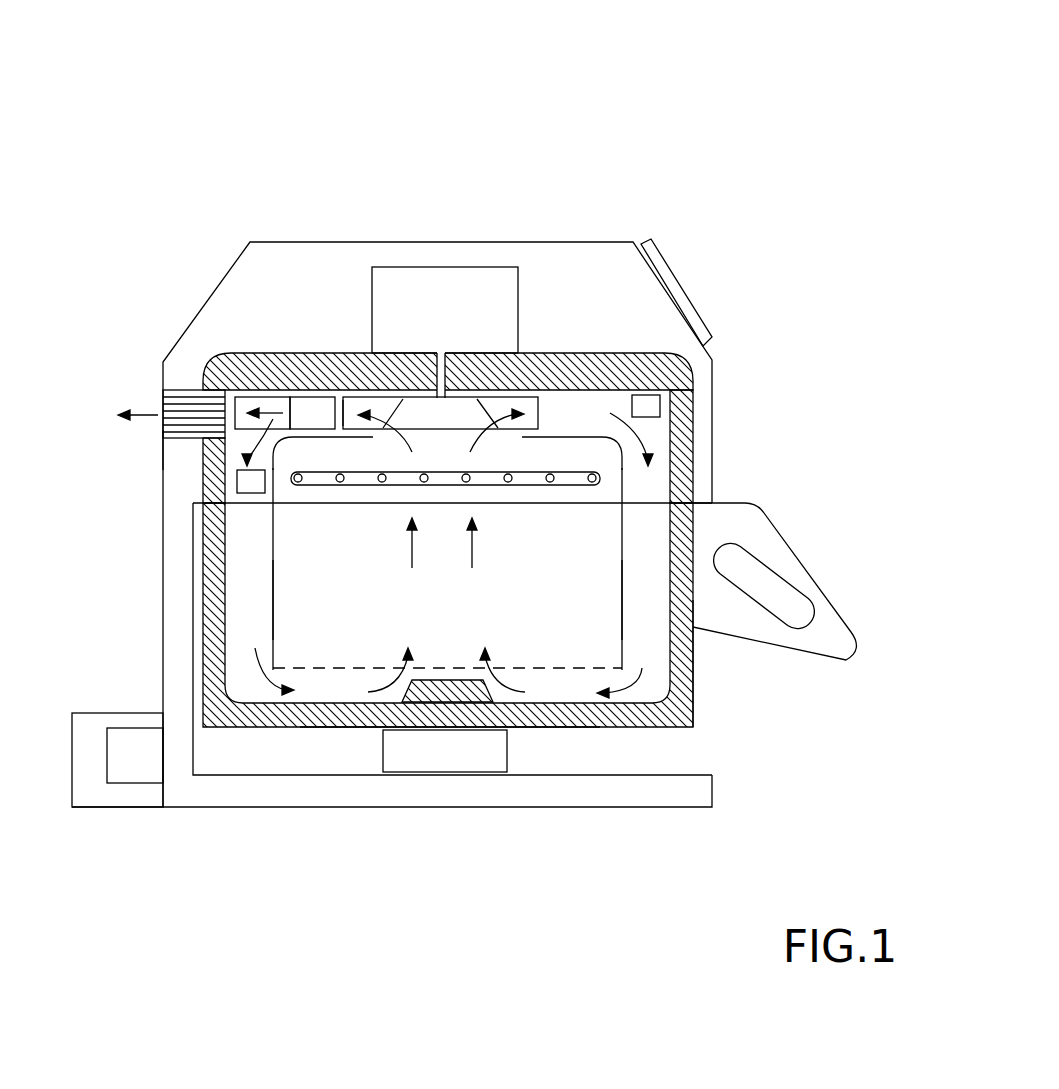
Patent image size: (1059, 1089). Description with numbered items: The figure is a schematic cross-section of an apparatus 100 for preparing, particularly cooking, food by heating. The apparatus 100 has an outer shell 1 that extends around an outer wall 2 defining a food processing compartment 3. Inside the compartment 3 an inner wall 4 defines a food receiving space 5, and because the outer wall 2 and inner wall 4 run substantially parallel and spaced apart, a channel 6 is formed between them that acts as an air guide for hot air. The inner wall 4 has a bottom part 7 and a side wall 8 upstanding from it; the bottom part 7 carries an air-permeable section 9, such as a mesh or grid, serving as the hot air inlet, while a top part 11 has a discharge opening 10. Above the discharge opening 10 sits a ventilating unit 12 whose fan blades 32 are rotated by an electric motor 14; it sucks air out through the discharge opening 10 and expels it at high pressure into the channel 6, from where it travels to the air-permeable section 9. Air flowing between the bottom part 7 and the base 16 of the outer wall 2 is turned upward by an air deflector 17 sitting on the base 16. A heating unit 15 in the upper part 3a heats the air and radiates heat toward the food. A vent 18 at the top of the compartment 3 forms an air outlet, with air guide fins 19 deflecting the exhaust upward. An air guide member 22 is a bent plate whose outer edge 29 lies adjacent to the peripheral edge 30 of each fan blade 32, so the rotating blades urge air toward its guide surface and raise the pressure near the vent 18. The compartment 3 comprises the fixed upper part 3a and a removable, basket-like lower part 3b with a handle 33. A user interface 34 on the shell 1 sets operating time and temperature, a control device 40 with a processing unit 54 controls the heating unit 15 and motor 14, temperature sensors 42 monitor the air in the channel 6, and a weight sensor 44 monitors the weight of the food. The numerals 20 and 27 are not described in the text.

The apparatus 100 is at (652, 147).
The outer shell 1 is at (192, 788).
The outer wall 2 is at (207, 682).
The food processing compartment 3 is at (585, 550).
The upper part 3a is at (610, 450).
The lower part 3b is at (342, 680).
The inner wall 4 is at (272, 623).
The food receiving space 5 is at (285, 592).
The channel 6 is at (233, 545).
The bottom part 7 is at (280, 672).
The side wall 8 is at (622, 618).
The air-permeable section 9 is at (550, 727).
The discharge opening 10 is at (447, 447).
The top part 11 is at (565, 435).
The ventilating unit 12 is at (437, 417).
The electric motor 14 is at (420, 278).
The heating unit 15 is at (328, 486).
The base 16 is at (606, 717).
The air deflector 17 is at (443, 700).
The vent 18 is at (160, 404).
The air guide fins 19 is at (188, 402).
The housing side wall 20 is at (163, 447).
The air guide member 22 is at (255, 403).
The top insulation 27 is at (555, 377).
The outer edge 29 is at (330, 412).
The peripheral edge 30 is at (357, 416).
The fan blades 32 is at (370, 405).
The handle 33 is at (795, 577).
The user interface 34 is at (690, 312).
The control device 40 is at (145, 772).
The sensors 42 is at (237, 481).
The weight sensor 44 is at (467, 750).
The processing unit 54 is at (88, 795).